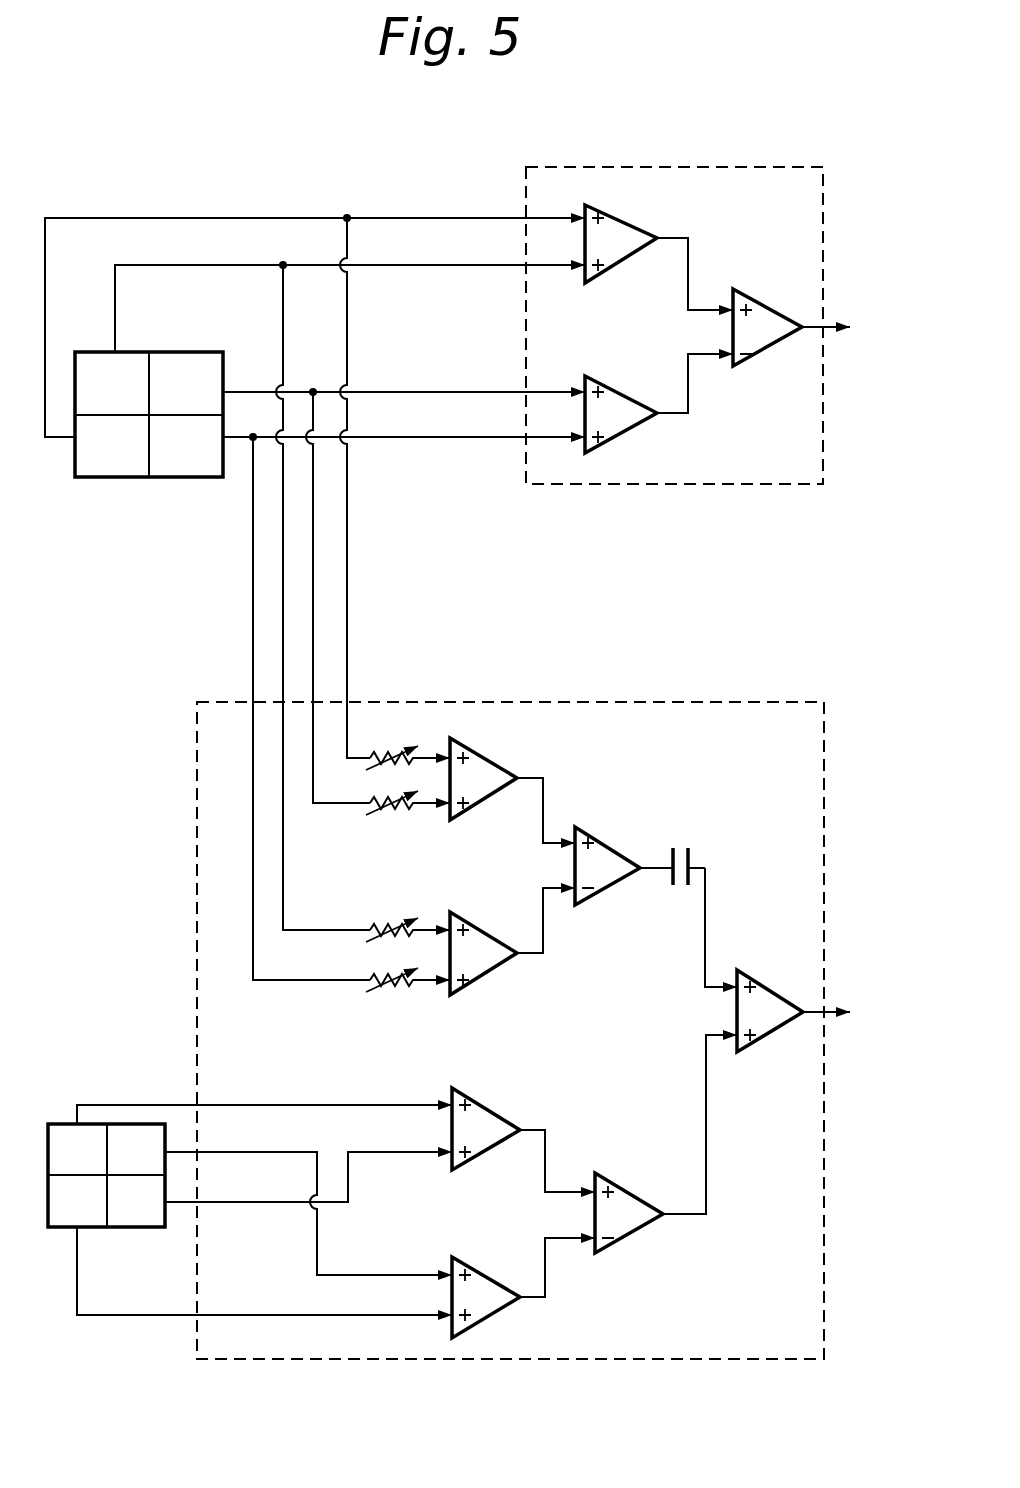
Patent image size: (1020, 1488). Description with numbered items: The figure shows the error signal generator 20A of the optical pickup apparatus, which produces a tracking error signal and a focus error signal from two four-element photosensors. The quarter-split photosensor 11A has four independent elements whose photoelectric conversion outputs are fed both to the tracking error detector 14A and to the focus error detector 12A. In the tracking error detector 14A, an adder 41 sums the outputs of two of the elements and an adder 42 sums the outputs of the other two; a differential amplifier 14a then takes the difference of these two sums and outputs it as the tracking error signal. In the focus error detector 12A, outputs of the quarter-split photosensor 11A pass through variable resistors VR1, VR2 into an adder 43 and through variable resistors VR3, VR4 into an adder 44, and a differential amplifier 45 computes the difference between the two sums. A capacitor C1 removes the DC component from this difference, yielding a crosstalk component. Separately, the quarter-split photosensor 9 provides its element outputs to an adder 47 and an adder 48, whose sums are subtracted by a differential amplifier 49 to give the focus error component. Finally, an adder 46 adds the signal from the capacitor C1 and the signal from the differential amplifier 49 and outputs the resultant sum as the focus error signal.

The quarter-split photosensor 9 is at (61, 1116).
The quarter-split photosensor 11A is at (197, 346).
The focus error detector 12A is at (683, 702).
The tracking error detector 14A is at (707, 167).
The differential amplifier 14a is at (761, 304).
The error signal generator 20A is at (350, 178).
The adder 41 is at (633, 227).
The adder 42 is at (618, 393).
The adder 43 is at (492, 763).
The adder 44 is at (489, 935).
The differential amplifier 45 is at (610, 849).
The adder 46 is at (768, 989).
The adder 47 is at (493, 1113).
The adder 48 is at (487, 1278).
The differential amplifier 49 is at (633, 1196).
The capacitor C1 is at (695, 850).
The variable resistor VR1 is at (407, 747).
The variable resistor VR2 is at (407, 794).
The variable resistor VR3 is at (407, 918).
The variable resistor VR4 is at (407, 970).